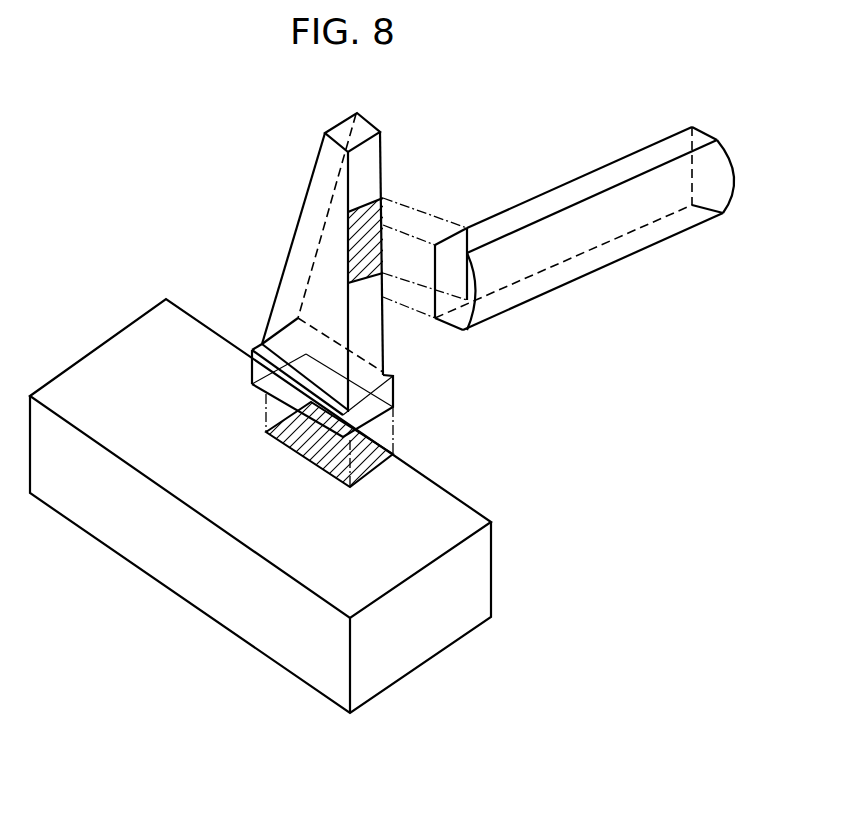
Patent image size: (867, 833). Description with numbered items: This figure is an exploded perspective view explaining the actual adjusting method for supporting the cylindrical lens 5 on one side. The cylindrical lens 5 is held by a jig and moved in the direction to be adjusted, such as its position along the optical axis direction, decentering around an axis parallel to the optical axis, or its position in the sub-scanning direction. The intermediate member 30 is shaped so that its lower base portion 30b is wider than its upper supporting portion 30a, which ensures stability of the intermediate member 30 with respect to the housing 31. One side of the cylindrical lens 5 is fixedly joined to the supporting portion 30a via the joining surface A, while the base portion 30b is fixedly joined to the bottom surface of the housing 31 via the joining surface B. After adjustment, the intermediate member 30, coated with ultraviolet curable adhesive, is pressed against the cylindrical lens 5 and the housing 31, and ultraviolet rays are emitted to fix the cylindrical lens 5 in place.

The cylindrical lens 5 is at (631, 146).
The intermediate member 30 is at (277, 350).
The supporting portion 30a is at (373, 150).
The base portion 30b is at (393, 393).
The housing 31 is at (452, 512).
The surface A is at (380, 251).
The surface B is at (368, 466).